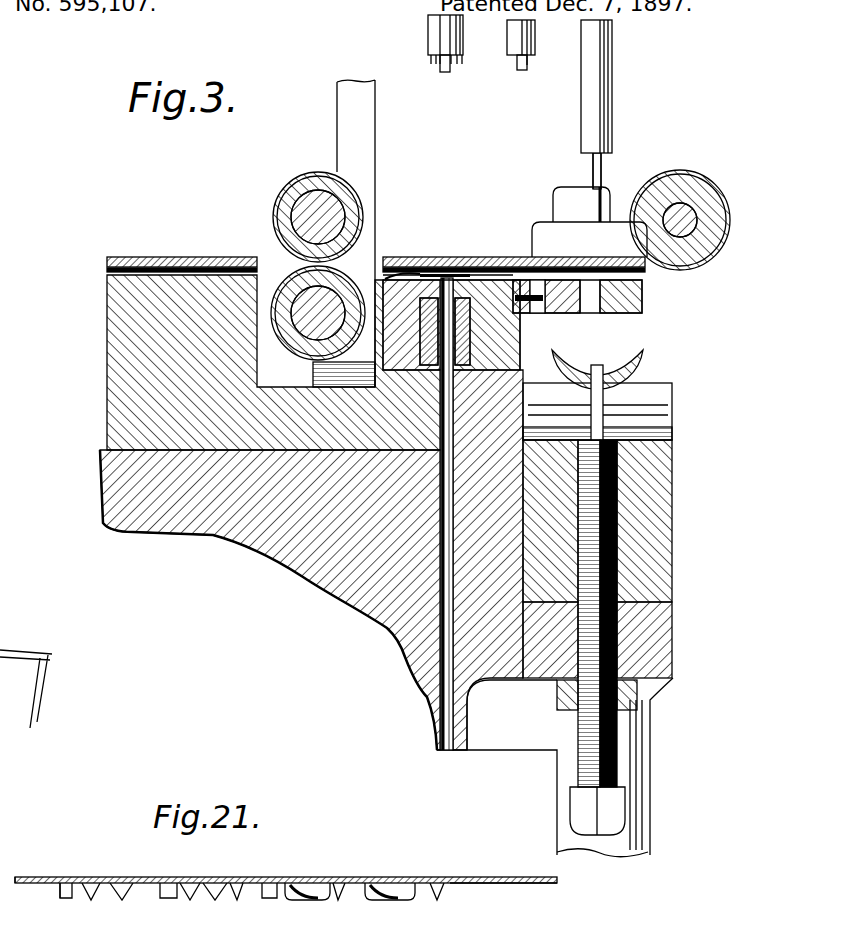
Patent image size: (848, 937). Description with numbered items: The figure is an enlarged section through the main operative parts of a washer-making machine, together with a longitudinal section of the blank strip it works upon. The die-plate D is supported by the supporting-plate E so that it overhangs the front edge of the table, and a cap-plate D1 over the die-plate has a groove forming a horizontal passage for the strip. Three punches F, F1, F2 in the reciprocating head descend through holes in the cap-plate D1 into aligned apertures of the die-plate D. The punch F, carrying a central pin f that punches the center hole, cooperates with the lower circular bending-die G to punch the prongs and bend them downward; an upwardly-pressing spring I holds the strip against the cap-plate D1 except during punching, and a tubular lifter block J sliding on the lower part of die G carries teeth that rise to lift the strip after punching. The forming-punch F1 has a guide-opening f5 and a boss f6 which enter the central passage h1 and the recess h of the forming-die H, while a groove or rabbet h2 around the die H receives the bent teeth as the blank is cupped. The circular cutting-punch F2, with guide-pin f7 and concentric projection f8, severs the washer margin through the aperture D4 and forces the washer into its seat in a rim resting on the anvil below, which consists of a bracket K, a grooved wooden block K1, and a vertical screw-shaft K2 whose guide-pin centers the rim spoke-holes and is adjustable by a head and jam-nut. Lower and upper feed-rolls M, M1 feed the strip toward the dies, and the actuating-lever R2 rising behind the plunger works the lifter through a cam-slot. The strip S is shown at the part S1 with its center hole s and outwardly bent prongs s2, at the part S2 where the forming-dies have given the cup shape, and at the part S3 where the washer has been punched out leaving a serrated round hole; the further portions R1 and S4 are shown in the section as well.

In FIG. 3, the cap-plate D1 is at (160, 257).
In FIG. 3, the supporting-plate E is at (125, 382).
In FIG. 3, the frame casting R1 is at (300, 572).
In FIG. 3, the actuating-lever R2 is at (356, 233).
In FIG. 3, the lower feed-roll M is at (300, 282).
In FIG. 3, the upper feed-roll M1 is at (302, 200).
In FIG. 3, the die-plate D is at (475, 325).
In FIG. 3, the tubular block J is at (525, 345).
In FIG. 3, the forming-die H is at (520, 262).
In FIG. 3, the bending-die G is at (450, 275).
In FIG. 3, the upwardly-pressing spring I is at (400, 272).
In FIG. 3, the aperture D4 is at (605, 305).
In FIG. 3, the recess h is at (537, 290).
In FIG. 3, the central passage h1 is at (528, 303).
In FIG. 3, the groove or rabbet h2 is at (555, 290).
In FIG. 3, the punch F is at (430, 32).
In FIG. 3, the forming-punch F1 is at (535, 45).
In FIG. 3, the circular cutting-punch F2 is at (612, 52).
In FIG. 3, the central concentric projection or pin f is at (446, 72).
In FIG. 3, the central guide-opening f5 is at (518, 70).
In FIG. 3, the projection or boss f6 is at (529, 60).
In FIG. 3, the central guide-pin f7 is at (592, 175).
In FIG. 3, the concentric projection f8 is at (603, 165).
In FIG. 3, the bracket K is at (684, 636).
In FIG. 3, the wooden block K1 is at (682, 497).
In FIG. 3, the vertical screw-shaft K2 is at (604, 412).
In FIG. 21, the blank strip S is at (235, 870).
In FIG. 21, the part of the strip S1 is at (45, 870).
In FIG. 21, the part of the strip S2 is at (345, 877).
In FIG. 21, the part of the blank S3 is at (318, 866).
In FIG. 21, the strip plain portion S4 is at (503, 878).
In FIG. 21, the center hole s is at (320, 898).
In FIG. 21, the prongs s2 is at (88, 897).